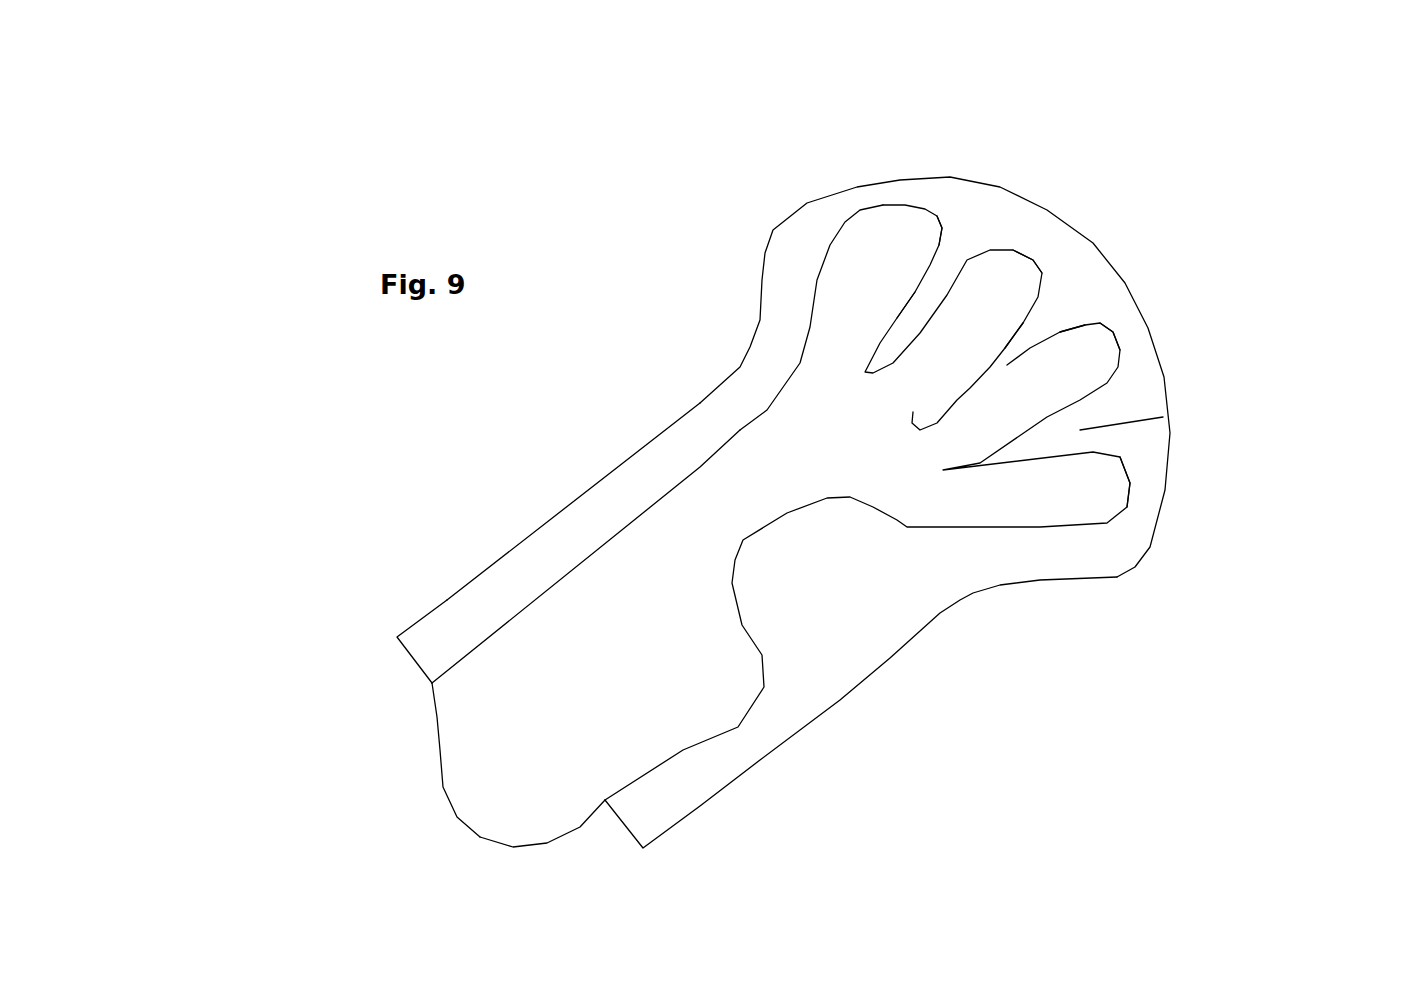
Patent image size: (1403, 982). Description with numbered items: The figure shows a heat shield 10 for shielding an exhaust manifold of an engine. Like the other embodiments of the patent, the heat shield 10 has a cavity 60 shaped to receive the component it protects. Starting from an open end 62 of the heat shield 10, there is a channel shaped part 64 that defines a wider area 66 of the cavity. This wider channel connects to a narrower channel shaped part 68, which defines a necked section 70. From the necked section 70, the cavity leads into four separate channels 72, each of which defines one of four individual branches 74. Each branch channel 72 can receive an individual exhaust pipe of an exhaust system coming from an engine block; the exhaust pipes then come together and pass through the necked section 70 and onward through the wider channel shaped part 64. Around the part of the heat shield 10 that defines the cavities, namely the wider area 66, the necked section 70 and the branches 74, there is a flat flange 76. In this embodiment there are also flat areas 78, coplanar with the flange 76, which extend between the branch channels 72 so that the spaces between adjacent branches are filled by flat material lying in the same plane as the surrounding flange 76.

The heat shield 10 is at (938, 338).
The cavity 60 is at (401, 783).
The open end 62 is at (455, 779).
The channel shaped part 64 is at (409, 616).
The wider area 66 is at (861, 732).
The narrower channel shaped part 68 is at (557, 506).
The necked section 70 is at (586, 556).
The channels 72 is at (988, 455).
The branches 74 is at (1045, 349).
The flat flange 76 is at (772, 265).
The flat areas 78 is at (1106, 265).